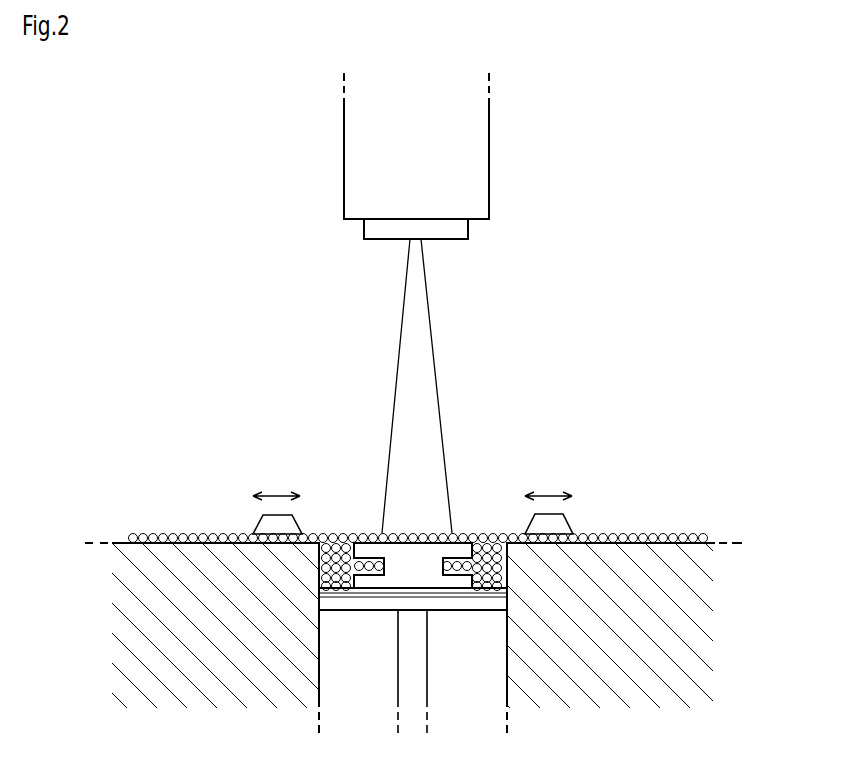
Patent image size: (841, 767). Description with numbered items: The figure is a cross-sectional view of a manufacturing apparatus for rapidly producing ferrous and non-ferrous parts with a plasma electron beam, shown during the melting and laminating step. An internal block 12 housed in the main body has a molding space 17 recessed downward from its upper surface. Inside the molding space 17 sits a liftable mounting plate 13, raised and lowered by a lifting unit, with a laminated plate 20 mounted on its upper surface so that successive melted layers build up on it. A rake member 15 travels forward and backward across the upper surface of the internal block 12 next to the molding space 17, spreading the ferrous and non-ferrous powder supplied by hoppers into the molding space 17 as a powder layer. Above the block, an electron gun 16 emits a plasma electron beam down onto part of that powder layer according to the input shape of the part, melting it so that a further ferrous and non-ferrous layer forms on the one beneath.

The internal block 12 is at (137, 611).
The mounting plate 13 is at (507, 608).
The rake member 15 is at (262, 525).
The electron gun 16 is at (476, 164).
The molding space 17 is at (508, 555).
The laminated plate 20 is at (507, 595).